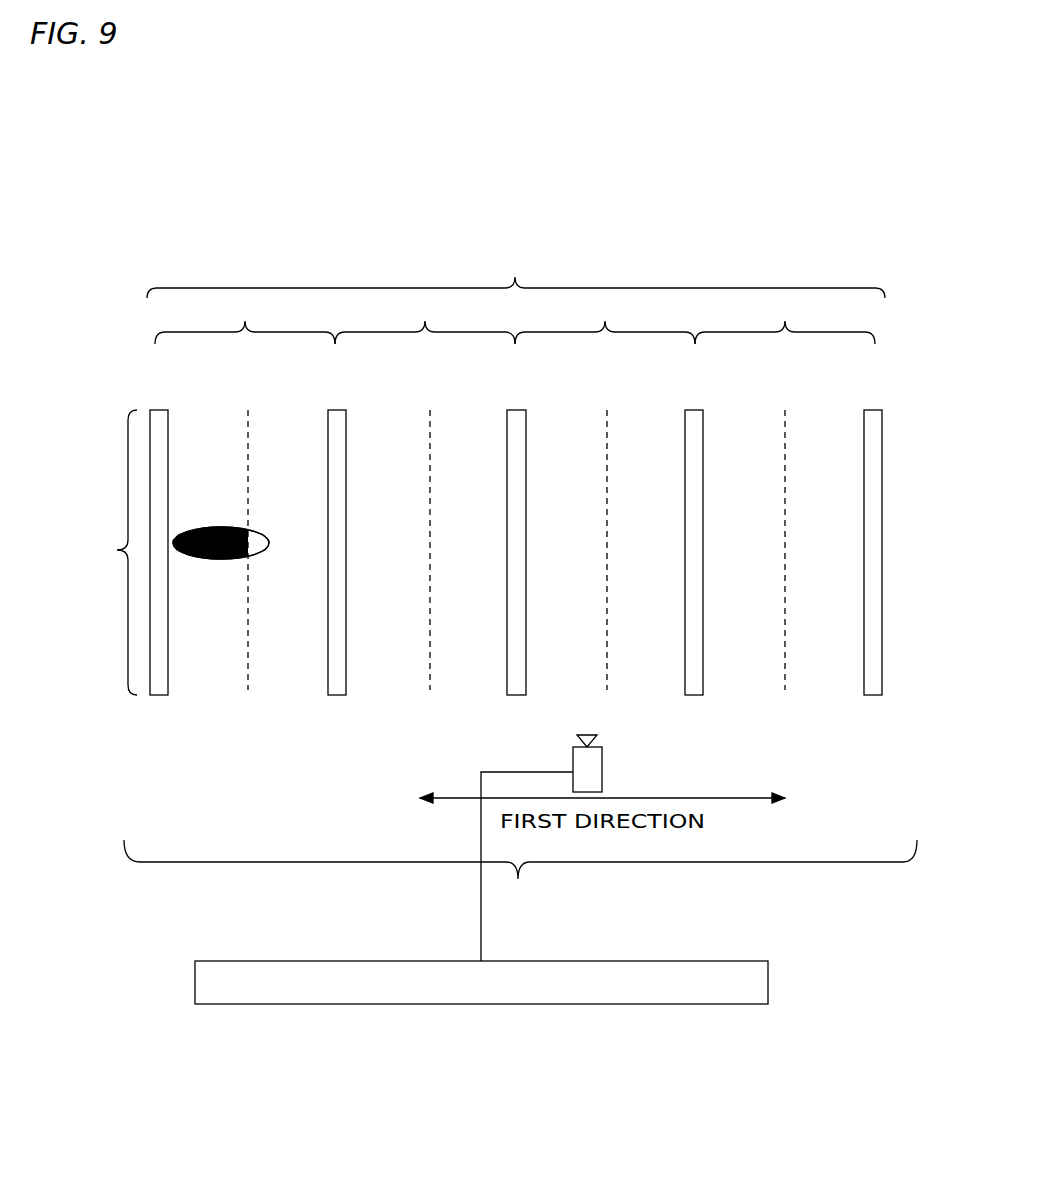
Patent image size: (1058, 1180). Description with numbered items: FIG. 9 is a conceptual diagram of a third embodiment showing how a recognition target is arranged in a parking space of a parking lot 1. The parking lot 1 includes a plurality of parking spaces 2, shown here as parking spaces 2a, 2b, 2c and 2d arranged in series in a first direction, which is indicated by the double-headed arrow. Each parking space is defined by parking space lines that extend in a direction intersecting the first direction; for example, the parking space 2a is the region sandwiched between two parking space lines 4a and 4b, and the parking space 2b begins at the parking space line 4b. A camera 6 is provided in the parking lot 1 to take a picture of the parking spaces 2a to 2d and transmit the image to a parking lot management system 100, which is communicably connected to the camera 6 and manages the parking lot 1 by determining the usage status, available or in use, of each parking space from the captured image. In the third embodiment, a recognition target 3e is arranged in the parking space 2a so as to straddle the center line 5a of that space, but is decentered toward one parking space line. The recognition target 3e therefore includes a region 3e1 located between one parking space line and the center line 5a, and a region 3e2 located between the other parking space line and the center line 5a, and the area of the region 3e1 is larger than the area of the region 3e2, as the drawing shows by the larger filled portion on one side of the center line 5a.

The parking lot 1 is at (520, 877).
The parking spaces 2 is at (516, 272).
The parking space 2a is at (206, 497).
The parking space 2b is at (425, 320).
The parking space 2c is at (605, 320).
The parking space 2d is at (785, 319).
The parking space line 4a is at (152, 470).
The parking space line 4b is at (333, 410).
The region of recognition target 3e1 is at (221, 531).
The region of recognition target 3e2 is at (232, 533).
The recognition target 3e is at (248, 557).
The center line 5a is at (248, 570).
The camera 6 is at (602, 778).
The parking lot management system 100 is at (252, 961).